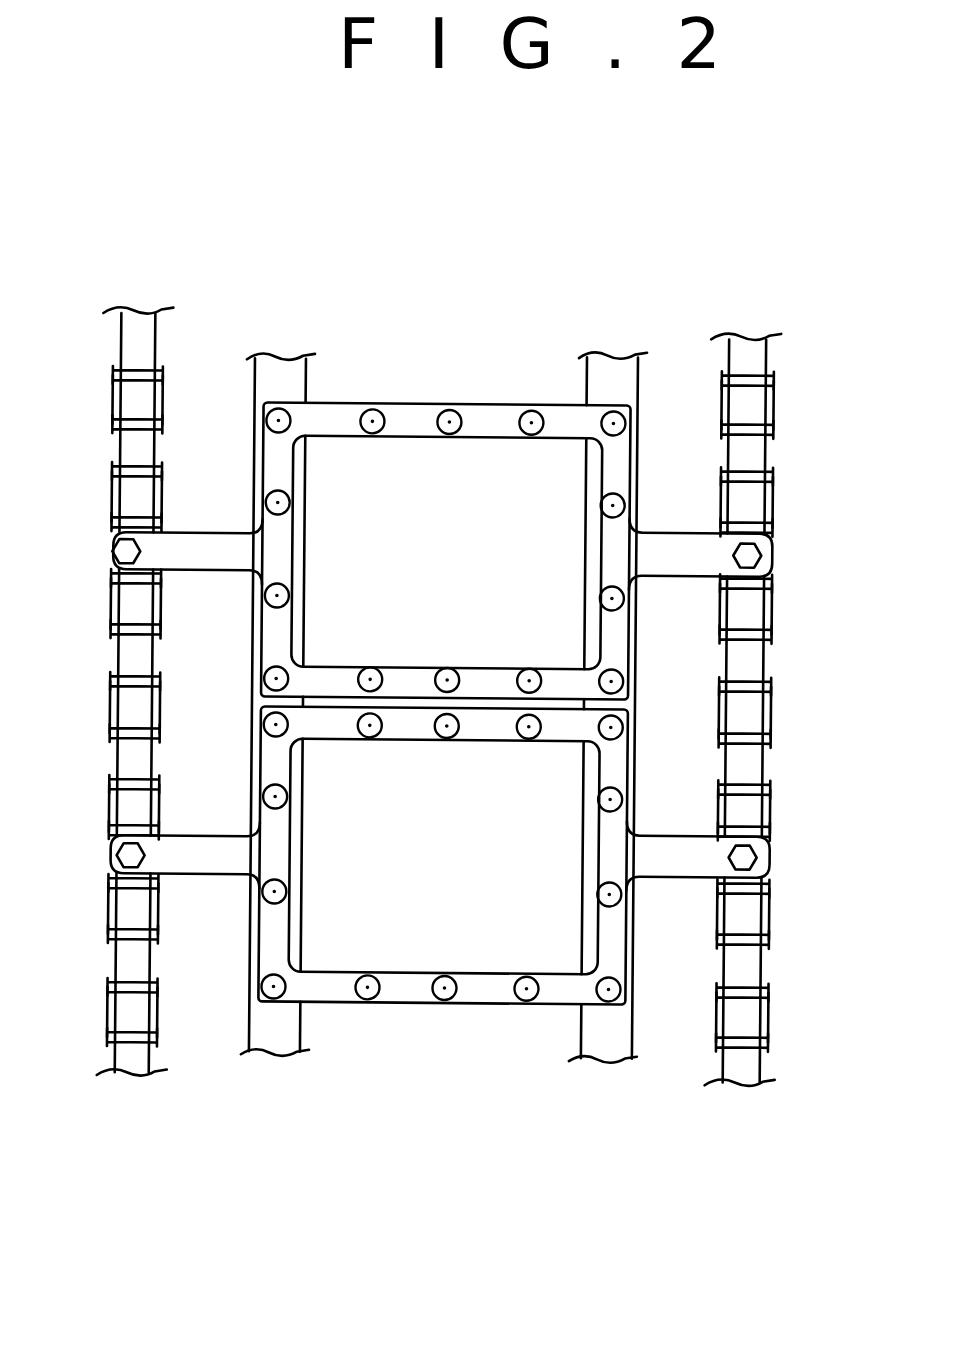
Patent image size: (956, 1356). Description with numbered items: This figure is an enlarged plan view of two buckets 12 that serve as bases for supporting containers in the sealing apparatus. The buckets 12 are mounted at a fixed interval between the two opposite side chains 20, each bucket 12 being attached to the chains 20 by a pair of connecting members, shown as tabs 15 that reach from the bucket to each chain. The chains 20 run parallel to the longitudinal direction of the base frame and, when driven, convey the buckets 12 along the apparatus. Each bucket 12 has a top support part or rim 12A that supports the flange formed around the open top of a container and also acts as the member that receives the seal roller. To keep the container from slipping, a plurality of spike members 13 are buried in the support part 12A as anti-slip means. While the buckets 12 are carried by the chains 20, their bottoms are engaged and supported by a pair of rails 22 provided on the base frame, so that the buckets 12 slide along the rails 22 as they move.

The bucket 12 is at (456, 398).
The top support part 12A is at (334, 420).
The spike members 13 is at (525, 427).
The attachment tabs 15 is at (193, 545).
The chains 20 is at (110, 712).
The rails 22 is at (281, 1028).